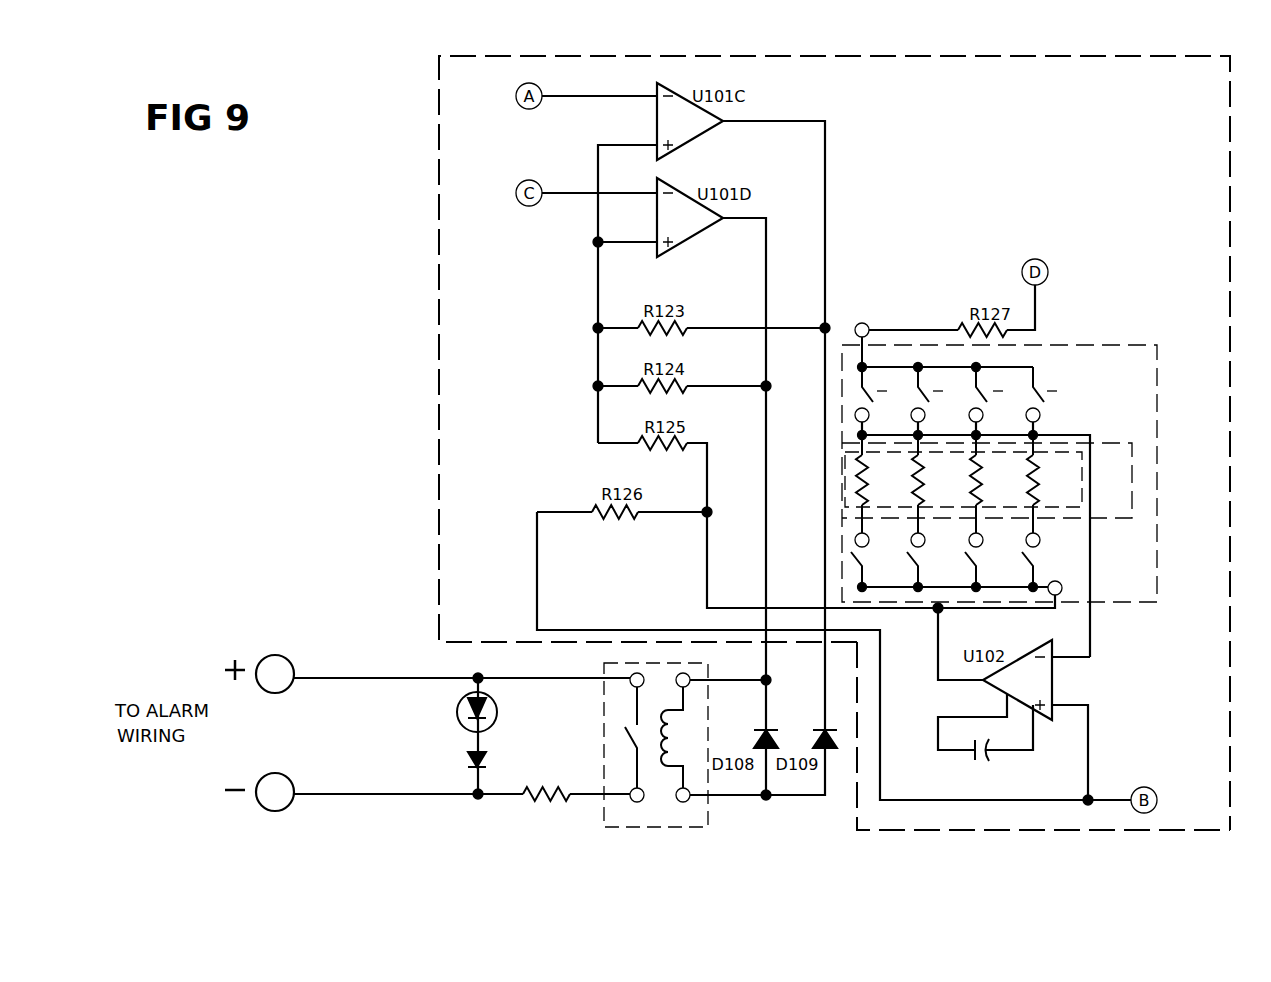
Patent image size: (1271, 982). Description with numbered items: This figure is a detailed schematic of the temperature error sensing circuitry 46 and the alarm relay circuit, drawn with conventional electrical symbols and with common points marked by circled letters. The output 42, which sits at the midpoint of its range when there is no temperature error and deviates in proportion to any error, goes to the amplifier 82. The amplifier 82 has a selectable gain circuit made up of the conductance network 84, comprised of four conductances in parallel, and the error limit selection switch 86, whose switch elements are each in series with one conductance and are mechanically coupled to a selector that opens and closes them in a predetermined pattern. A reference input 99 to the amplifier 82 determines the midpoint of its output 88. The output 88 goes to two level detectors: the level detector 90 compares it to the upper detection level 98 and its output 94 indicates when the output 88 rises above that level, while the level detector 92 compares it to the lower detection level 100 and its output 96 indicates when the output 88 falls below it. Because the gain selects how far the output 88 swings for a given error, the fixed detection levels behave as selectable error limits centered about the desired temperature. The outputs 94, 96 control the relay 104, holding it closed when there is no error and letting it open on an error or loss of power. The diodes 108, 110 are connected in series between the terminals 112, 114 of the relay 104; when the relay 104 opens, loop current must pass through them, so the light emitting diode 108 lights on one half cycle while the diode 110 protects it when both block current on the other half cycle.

The upper detection level 98 is at (645, 95).
The output of level detector 90 94 is at (737, 121).
The level detector 90 is at (700, 137).
The lower detection level 100 is at (648, 192).
The output of level detector 92 96 is at (740, 218).
The level detector 92 is at (697, 238).
The output 42 is at (967, 332).
The conductance network 84 is at (845, 472).
The error limit selection switch 86 is at (1157, 472).
The output of amplifier 82 88 is at (938, 670).
The amplifier 82 is at (997, 693).
The reference input 99 is at (1073, 703).
The temperature error sensing circuitry 46 is at (1027, 830).
The terminal of relay 104 112 is at (332, 677).
The terminal of relay 104 114 is at (337, 795).
The light emitting diode 108 is at (457, 697).
The diode 110 is at (463, 756).
The relay 104 is at (712, 818).